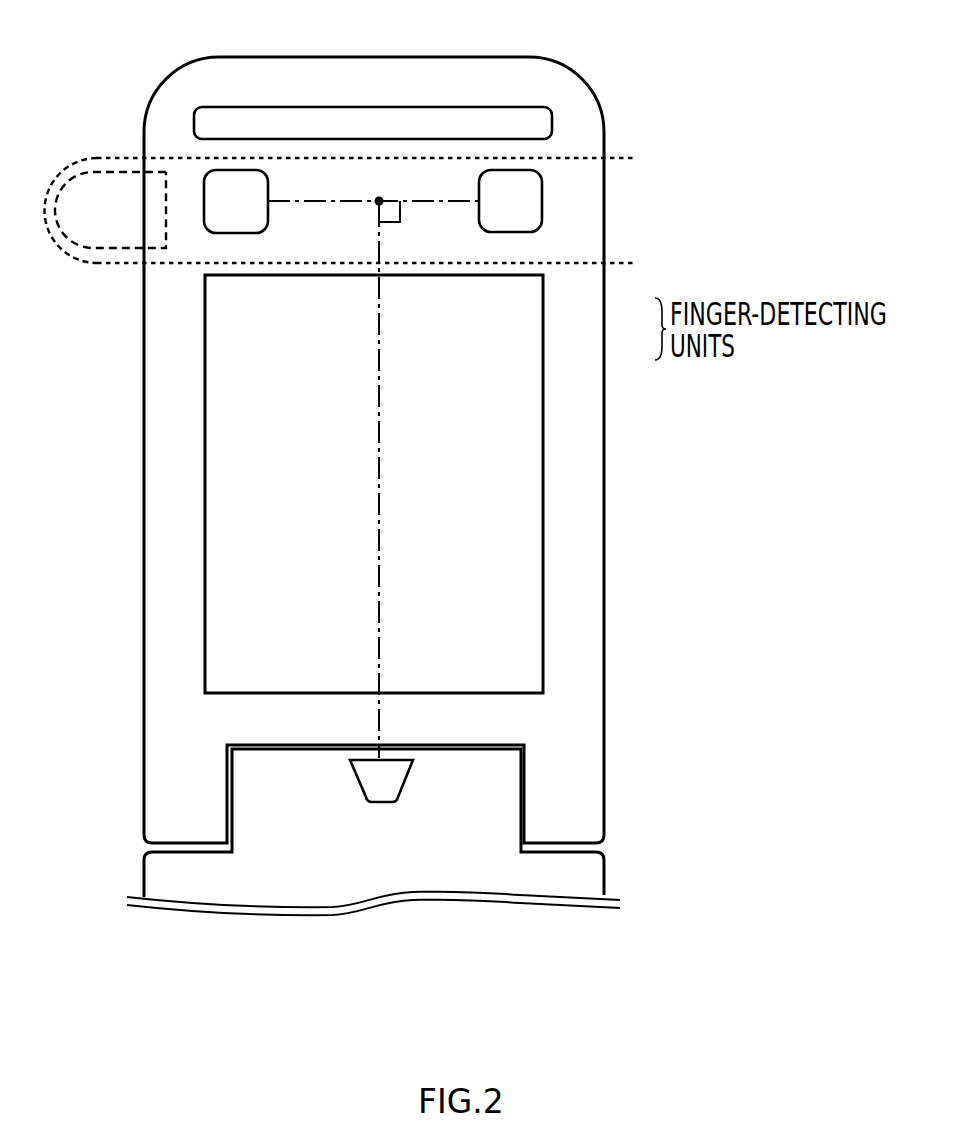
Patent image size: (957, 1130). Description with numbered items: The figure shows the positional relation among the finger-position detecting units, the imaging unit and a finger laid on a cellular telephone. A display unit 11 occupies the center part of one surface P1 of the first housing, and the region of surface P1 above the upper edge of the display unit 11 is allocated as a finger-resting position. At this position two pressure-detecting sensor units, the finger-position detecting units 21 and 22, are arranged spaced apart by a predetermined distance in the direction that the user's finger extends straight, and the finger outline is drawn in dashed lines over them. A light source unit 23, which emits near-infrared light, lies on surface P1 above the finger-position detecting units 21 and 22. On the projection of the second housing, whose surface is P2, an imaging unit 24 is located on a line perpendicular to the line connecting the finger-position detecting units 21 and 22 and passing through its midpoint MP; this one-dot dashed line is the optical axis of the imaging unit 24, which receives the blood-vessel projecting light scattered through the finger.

The display unit 11 is at (205, 487).
The finger-position detecting unit 21 is at (523, 232).
The finger-position detecting unit 22 is at (247, 230).
The light source unit 23 is at (457, 107).
The imaging unit 24 is at (398, 788).
The midpoint MP is at (379, 201).
The surface of the first housing P1 is at (602, 605).
The surface of the second housing P2 is at (602, 875).